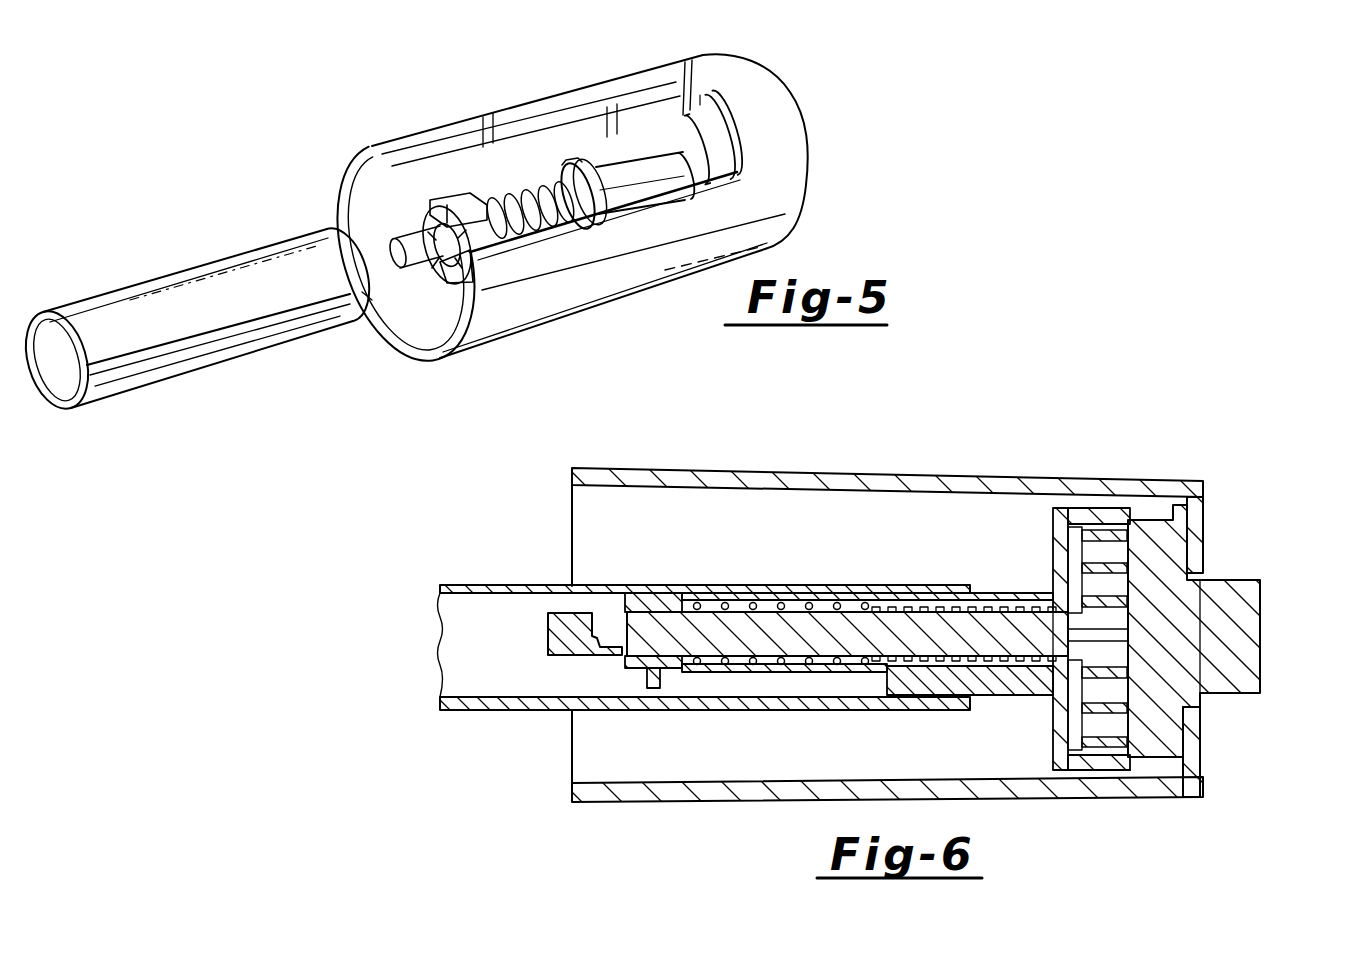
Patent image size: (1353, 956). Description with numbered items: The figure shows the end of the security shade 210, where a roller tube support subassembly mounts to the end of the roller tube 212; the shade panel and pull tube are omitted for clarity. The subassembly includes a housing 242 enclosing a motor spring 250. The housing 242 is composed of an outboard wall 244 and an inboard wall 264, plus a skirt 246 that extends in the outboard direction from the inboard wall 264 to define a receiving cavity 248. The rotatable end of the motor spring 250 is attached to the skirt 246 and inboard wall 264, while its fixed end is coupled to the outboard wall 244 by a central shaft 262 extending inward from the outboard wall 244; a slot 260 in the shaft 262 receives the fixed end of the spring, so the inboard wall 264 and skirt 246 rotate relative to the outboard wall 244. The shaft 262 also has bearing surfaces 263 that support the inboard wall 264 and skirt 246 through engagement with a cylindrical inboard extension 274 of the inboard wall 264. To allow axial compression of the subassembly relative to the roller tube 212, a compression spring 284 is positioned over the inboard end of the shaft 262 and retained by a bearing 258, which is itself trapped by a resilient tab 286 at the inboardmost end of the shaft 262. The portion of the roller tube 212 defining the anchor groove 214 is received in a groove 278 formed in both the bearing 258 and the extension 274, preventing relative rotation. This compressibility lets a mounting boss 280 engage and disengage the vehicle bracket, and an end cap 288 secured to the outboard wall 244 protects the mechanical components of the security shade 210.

In FIG. 5, the security shade 210 is at (588, 57).
In FIG. 5, the roller tube 212 is at (172, 313).
In FIG. 6, the roller tube 212 is at (483, 587).
In FIG. 5, the anchor groove 214 is at (193, 352).
In FIG. 5, the housing 242 is at (645, 140).
In FIG. 6, the housing 242 is at (1207, 568).
In FIG. 6, the outboard wall 244 is at (1150, 558).
In FIG. 5, the skirt 246 is at (712, 163).
In FIG. 6, the skirt 246 is at (1095, 757).
In FIG. 6, the receiving cavity 248 is at (1073, 723).
In FIG. 6, the motor spring 250 is at (1103, 560).
In FIG. 5, the bearing 258 is at (427, 292).
In FIG. 6, the slot 260 is at (1113, 633).
In FIG. 5, the central shaft 262 is at (362, 290).
In FIG. 6, the central shaft 262 is at (864, 632).
In FIG. 6, the bearing surfaces 263 is at (937, 600).
In FIG. 5, the inboard wall 264 is at (687, 137).
In FIG. 6, the inboard wall 264 is at (1050, 535).
In FIG. 5, the cylindrical inboard extension 274 is at (637, 182).
In FIG. 6, the cylindrical inboard extension 274 is at (985, 588).
In FIG. 5, the groove 278 is at (447, 349).
In FIG. 6, the mounting boss 280 is at (1237, 663).
In FIG. 5, the compression spring 284 is at (560, 190).
In FIG. 6, the compression spring 284 is at (797, 662).
In FIG. 5, the resilient tab 286 is at (375, 313).
In FIG. 6, the resilient tab 286 is at (608, 652).
In FIG. 5, the end cap 288 is at (780, 220).
In FIG. 6, the end cap 288 is at (619, 468).